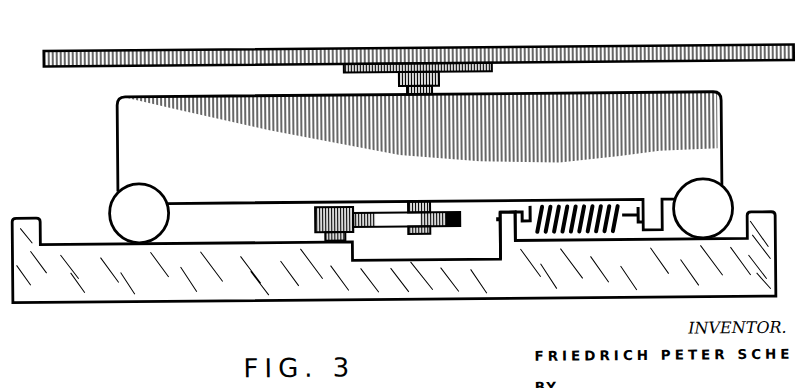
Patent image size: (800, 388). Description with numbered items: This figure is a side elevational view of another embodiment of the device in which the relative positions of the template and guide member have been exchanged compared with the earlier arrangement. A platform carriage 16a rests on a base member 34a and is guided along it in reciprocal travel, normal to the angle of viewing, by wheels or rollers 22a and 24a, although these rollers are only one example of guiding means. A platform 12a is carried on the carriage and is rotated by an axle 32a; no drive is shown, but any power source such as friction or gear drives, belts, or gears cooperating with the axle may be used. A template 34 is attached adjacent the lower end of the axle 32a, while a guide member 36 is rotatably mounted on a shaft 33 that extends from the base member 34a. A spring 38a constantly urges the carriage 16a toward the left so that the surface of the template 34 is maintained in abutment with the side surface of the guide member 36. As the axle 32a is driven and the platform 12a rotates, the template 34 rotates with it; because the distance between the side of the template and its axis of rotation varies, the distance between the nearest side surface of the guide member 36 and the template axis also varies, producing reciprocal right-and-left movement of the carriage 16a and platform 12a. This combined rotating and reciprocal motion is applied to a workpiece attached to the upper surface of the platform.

The platform 12a is at (655, 50).
The platform carriage 16a is at (722, 150).
The wheel or roller 22a is at (733, 208).
The wheel or roller 24a is at (110, 212).
The base member 34a is at (138, 300).
The guide member 36 is at (315, 212).
The shaft 33 is at (353, 237).
The axle 32a is at (437, 232).
The template 34 is at (463, 218).
The spring 38a is at (613, 234).